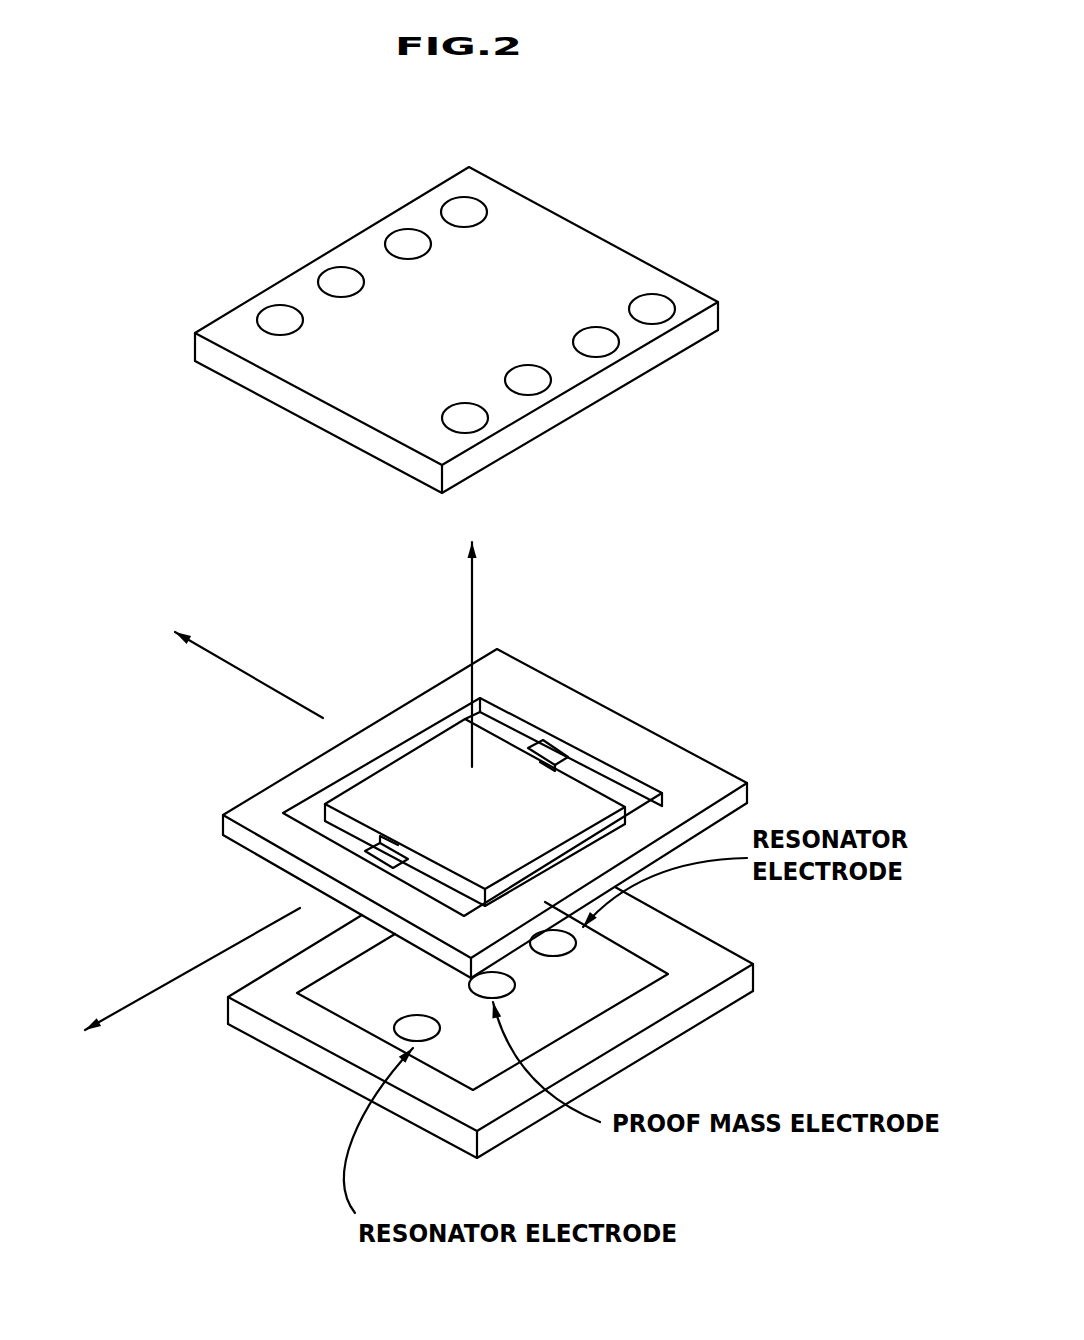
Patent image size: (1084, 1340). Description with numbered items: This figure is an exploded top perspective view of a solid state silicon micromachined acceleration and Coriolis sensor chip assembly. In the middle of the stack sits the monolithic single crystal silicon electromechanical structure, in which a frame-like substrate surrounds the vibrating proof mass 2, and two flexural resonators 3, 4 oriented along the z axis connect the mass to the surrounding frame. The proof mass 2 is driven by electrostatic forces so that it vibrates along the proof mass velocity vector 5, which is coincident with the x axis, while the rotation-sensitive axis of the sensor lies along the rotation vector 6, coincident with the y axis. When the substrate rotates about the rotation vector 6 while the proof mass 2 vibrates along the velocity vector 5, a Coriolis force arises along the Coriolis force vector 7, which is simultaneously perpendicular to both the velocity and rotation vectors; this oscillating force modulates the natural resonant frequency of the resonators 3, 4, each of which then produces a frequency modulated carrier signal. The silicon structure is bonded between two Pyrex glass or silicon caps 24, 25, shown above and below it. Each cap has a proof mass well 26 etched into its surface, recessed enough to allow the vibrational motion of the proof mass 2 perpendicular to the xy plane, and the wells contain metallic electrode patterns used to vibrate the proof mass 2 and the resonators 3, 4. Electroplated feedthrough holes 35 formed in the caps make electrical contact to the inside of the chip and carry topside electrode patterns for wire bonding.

The proof mass 2 is at (482, 857).
The flexural resonator 3 is at (377, 843).
The flexural resonator 4 is at (570, 747).
The proof mass velocity vector 5 is at (523, 634).
The rotation vector 6 is at (291, 647).
The Coriolis force vector 7 is at (174, 1017).
The Pyrex cap 24 is at (332, 242).
The Pyrex cap 25 is at (518, 1153).
The proof mass well 26 is at (603, 972).
The electroplated feedthrough holes 35 is at (658, 285).